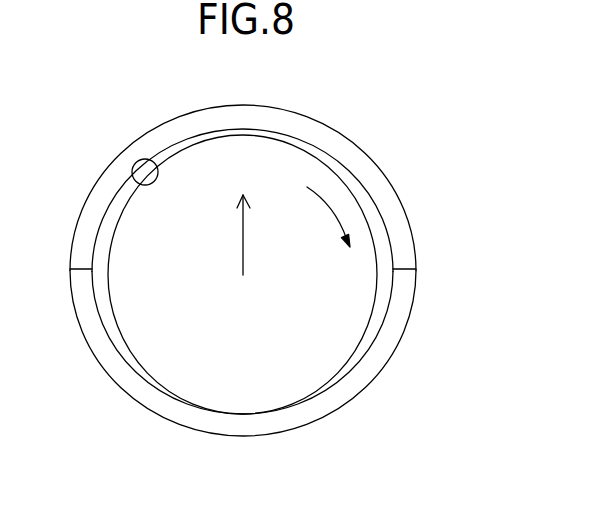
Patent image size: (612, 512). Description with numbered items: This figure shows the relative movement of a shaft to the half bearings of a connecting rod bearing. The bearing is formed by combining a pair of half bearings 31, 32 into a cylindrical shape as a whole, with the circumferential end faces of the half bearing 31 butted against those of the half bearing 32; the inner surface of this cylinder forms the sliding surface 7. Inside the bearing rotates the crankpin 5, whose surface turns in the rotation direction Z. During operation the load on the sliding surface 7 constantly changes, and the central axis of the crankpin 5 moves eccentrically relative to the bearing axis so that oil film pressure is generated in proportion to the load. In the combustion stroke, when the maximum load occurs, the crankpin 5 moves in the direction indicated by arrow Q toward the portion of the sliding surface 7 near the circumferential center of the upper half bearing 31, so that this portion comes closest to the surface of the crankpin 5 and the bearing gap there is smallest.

The half bearing 31 is at (330, 143).
The half bearing 32 is at (377, 360).
The crankpin 5 is at (353, 293).
The sliding surface 7 is at (133, 179).
The arrow Q is at (243, 243).
The rotation direction Z is at (335, 208).